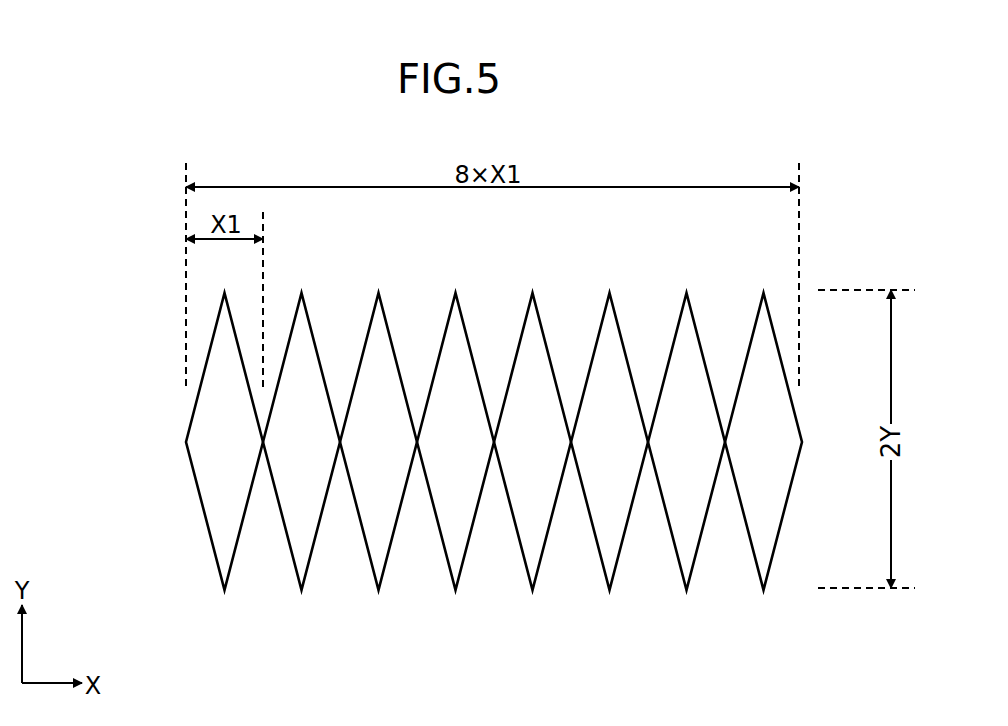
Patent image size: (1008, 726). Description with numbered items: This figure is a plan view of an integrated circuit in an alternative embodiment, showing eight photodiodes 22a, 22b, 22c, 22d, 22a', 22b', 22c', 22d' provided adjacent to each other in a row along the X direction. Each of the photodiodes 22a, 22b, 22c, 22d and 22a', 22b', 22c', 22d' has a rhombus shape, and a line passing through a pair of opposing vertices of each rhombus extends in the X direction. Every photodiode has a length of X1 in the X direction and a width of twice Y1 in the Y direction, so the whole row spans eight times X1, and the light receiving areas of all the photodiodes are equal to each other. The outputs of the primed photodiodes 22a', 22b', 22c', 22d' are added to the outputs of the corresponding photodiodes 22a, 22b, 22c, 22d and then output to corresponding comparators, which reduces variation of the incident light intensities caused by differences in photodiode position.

The photodiode 22a is at (215, 467).
The photodiode 22b is at (292, 467).
The photodiode 22c is at (370, 467).
The photodiode 22d is at (446, 467).
The photodiode 22a' is at (522, 467).
The photodiode 22b' is at (599, 467).
The photodiode 22c' is at (677, 467).
The photodiode 22d' is at (753, 467).